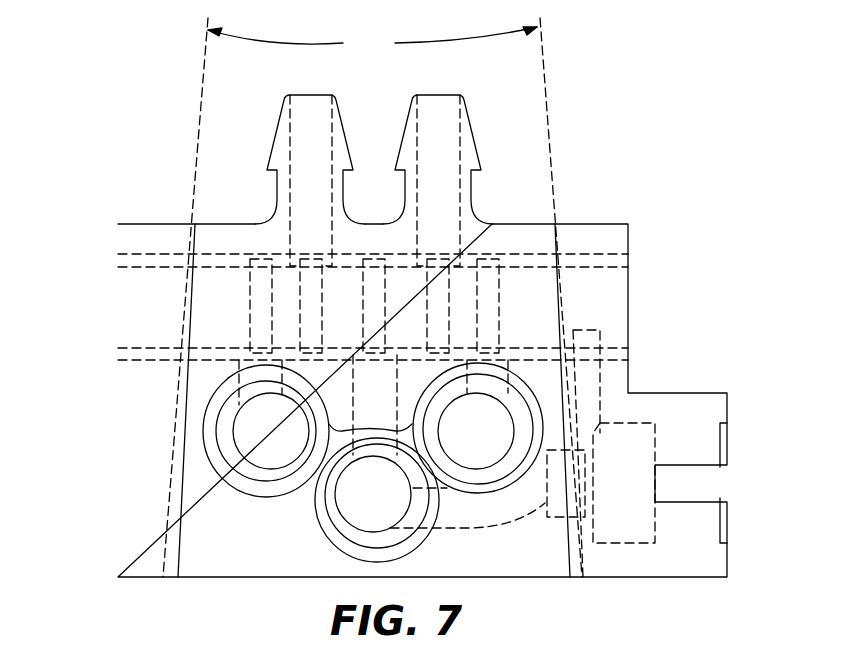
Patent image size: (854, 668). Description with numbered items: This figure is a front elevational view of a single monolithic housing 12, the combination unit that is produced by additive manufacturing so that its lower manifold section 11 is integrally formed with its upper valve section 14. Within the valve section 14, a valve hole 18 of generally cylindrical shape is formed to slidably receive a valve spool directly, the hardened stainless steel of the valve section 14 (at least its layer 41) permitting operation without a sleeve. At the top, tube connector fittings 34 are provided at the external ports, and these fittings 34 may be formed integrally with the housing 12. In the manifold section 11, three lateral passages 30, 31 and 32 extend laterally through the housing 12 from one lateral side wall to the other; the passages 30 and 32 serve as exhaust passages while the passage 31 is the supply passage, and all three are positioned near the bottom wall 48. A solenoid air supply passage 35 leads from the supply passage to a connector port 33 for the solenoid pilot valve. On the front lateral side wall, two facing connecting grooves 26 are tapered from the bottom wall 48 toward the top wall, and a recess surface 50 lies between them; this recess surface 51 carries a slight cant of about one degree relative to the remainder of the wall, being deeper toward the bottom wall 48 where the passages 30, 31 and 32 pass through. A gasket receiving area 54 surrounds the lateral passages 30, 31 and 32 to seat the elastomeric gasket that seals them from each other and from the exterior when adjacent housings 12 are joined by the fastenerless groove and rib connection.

The manifold section 11 is at (440, 551).
The housing 12 is at (143, 185).
The valve section 14 is at (615, 251).
The valve hole 18 is at (537, 283).
The connecting groove 26 is at (575, 592).
The lateral passage 30 is at (268, 462).
The lateral passage 31 is at (358, 524).
The lateral passage 32 is at (509, 432).
The connector port 33 is at (655, 447).
The fitting 34 is at (403, 126).
The solenoid air supply passage 35 is at (530, 493).
The layer 41 is at (623, 355).
The bottom wall 48 is at (247, 575).
The recess surface 50 is at (514, 564).
The recess surface 51 is at (257, 552).
The gasket receiving area 54 is at (336, 444).